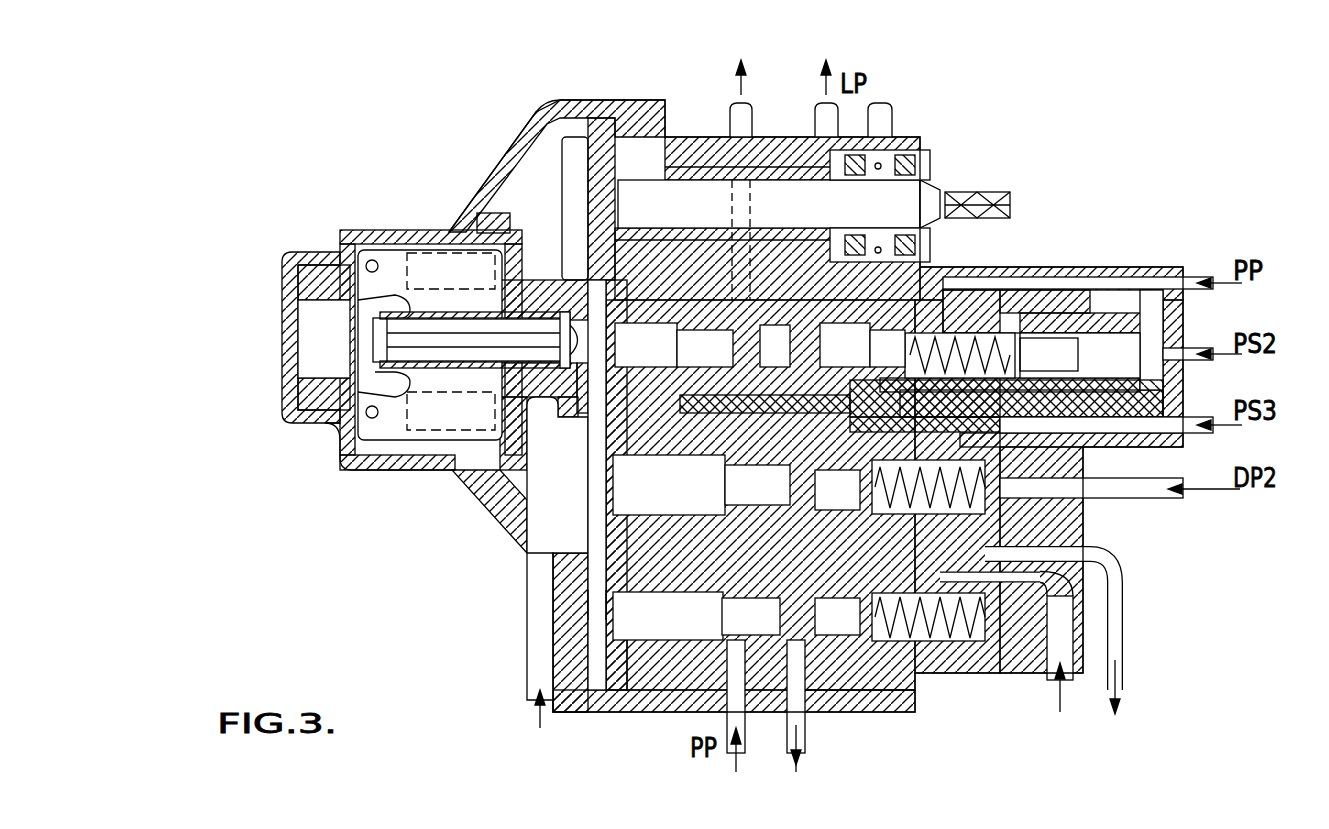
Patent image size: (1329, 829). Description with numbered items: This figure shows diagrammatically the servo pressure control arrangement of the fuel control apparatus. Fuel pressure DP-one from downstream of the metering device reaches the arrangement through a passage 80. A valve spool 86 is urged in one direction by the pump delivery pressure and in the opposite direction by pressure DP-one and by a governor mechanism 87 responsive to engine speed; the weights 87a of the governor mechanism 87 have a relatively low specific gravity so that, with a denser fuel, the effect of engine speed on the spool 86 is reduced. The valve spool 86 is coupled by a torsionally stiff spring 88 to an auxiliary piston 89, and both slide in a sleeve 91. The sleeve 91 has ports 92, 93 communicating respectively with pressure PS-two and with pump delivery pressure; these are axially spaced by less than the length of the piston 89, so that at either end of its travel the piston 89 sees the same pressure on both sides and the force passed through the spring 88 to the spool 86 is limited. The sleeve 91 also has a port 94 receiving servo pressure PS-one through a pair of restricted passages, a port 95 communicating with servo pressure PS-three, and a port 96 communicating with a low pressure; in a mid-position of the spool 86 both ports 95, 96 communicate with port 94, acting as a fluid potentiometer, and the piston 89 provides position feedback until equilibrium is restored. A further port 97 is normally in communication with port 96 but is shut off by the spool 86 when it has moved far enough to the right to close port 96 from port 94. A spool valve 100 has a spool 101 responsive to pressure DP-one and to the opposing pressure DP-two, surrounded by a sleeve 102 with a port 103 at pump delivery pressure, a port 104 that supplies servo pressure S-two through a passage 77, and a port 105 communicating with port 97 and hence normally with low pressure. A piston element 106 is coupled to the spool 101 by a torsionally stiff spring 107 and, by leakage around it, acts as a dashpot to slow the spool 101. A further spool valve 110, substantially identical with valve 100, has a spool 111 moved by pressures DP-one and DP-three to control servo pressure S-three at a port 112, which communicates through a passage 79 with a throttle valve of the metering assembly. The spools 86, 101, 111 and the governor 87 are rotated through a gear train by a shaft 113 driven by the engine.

The passage 77 is at (1122, 590).
The passage 79 is at (805, 722).
The passage 80 is at (540, 652).
The valve spool 86 is at (627, 337).
The governor mechanism 87 is at (411, 482).
The weights 87a is at (434, 268).
The torsionally stiff spring 88 is at (962, 340).
The auxiliary piston 89 is at (1050, 357).
The sleeve 91 is at (847, 303).
The port 92 is at (1005, 322).
The port 93 is at (1070, 330).
The port 94 is at (743, 303).
The port 95 is at (677, 397).
The port 96 is at (800, 392).
The further port 97 is at (902, 290).
The spool valve 100 is at (578, 479).
The spool 101 is at (627, 497).
The sleeve 102 is at (650, 453).
The port 103 is at (718, 572).
The port 104 is at (780, 566).
The port 105 is at (862, 600).
The piston element 106 is at (1080, 525).
The torsionally stiff spring 107 is at (876, 485).
The further spool valve 110 is at (586, 603).
The spool 111 is at (628, 625).
The port 112 is at (795, 650).
The shaft 113 is at (721, 200).